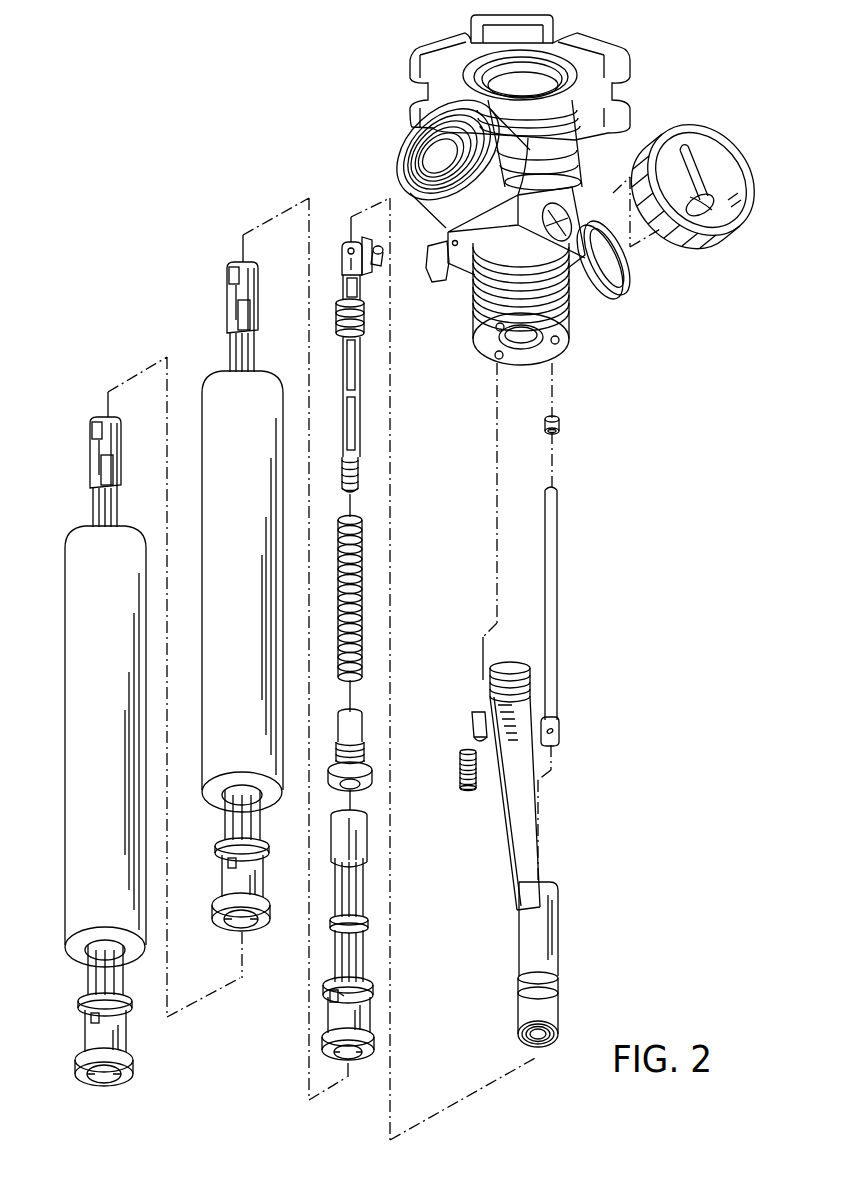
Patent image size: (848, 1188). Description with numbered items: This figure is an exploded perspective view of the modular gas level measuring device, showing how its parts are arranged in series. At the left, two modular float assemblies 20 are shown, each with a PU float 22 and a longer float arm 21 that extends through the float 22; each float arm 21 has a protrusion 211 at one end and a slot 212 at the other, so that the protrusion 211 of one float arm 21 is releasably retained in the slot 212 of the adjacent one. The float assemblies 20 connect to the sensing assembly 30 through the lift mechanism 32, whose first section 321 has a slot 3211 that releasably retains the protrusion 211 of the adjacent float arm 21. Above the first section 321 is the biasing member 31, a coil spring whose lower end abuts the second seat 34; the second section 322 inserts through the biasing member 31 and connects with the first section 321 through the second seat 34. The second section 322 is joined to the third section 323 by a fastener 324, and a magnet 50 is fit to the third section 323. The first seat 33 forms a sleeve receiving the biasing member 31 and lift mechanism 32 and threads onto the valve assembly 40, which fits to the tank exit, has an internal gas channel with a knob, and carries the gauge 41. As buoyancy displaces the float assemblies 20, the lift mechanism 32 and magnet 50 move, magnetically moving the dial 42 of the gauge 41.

The modular float assembly 20 is at (201, 814).
The float arm 21 is at (238, 316).
The protrusion 211 is at (228, 273).
The float 22 is at (222, 413).
The slot 212 is at (232, 863).
The sensing assembly 30 is at (632, 617).
The biasing member 31 is at (362, 537).
The lift mechanism 32 is at (283, 1062).
The first section 321 is at (356, 898).
The slot 3211 is at (330, 998).
The second section 322 is at (361, 397).
The third section 323 is at (558, 543).
The fastener 324 is at (382, 258).
The first seat 33 is at (517, 863).
The second seat 34 is at (353, 720).
The valve assembly 40 is at (337, 128).
The gauge 41 is at (668, 140).
The dial 42 is at (696, 156).
The magnet 50 is at (557, 425).